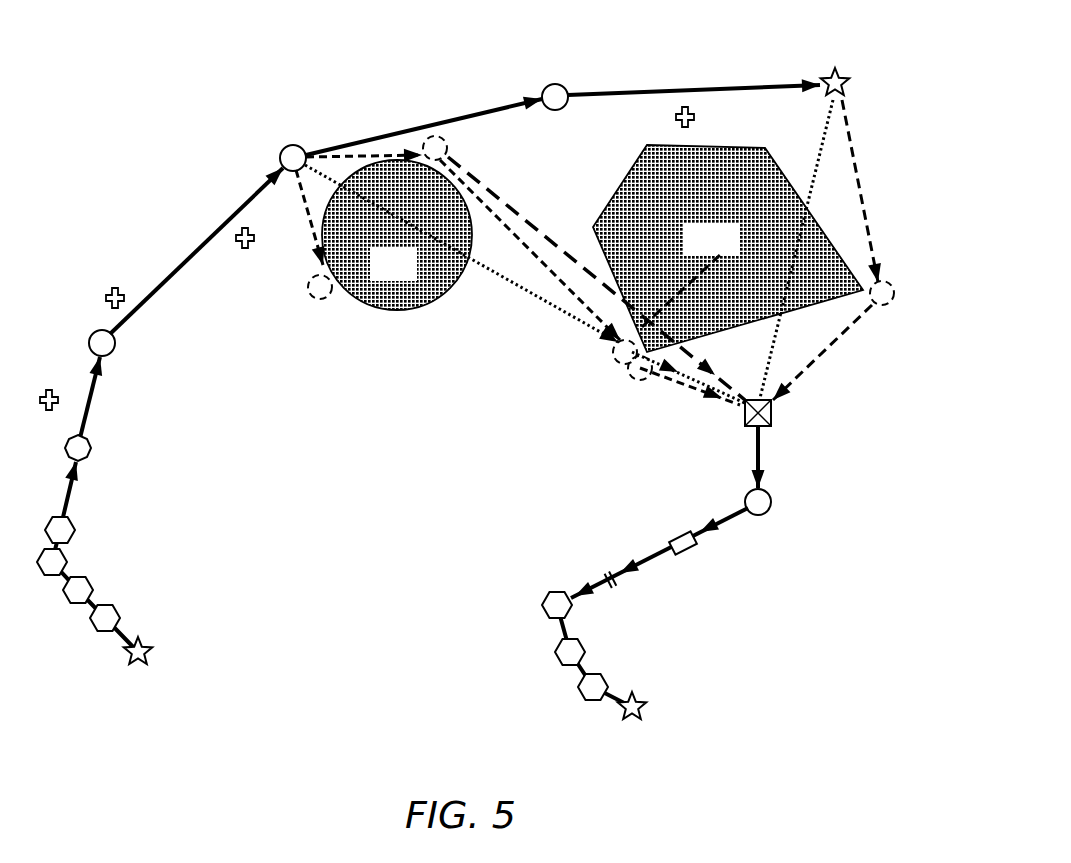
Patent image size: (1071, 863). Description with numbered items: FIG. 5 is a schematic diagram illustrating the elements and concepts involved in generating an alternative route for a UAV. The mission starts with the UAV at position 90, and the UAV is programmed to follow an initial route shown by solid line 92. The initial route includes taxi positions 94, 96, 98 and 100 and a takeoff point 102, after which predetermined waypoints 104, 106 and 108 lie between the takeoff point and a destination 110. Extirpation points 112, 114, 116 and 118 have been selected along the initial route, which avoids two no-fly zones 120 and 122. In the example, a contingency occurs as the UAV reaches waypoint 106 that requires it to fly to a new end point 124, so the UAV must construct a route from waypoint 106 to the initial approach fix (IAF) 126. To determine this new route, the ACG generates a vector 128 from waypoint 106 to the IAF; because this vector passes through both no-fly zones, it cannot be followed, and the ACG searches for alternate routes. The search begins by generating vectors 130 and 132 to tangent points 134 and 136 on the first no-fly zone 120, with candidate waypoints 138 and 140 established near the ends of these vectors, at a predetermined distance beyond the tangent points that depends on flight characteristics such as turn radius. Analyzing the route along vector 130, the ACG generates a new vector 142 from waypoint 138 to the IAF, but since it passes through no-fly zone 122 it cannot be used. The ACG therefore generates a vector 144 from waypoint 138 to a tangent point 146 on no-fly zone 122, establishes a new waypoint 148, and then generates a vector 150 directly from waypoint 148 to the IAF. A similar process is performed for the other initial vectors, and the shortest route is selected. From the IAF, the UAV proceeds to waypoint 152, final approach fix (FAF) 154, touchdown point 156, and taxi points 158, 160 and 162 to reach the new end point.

The position 90 is at (152, 653).
The solid line 92 is at (167, 287).
The taxi position 94 is at (120, 618).
The taxi position 96 is at (92, 588).
The taxi position 98 is at (65, 560).
The taxi position 100 is at (73, 523).
The takeoff point 102 is at (93, 448).
The waypoint 104 is at (117, 350).
The waypoint 106 is at (282, 150).
The waypoint 108 is at (558, 84).
The destination 110 is at (830, 72).
The extirpation point 112 is at (45, 410).
The extirpation point 114 is at (106, 298).
The extirpation point 116 is at (240, 248).
The extirpation point 118 is at (694, 120).
The no-fly zone 120 is at (412, 277).
The no-fly zone 122 is at (735, 254).
The new end point 124 is at (622, 722).
The initial approach fix (IAF) 126 is at (765, 428).
The vector 128 is at (545, 300).
The vector 130 is at (367, 152).
The vector 132 is at (312, 222).
The tangent point 134 is at (416, 147).
The tangent point 136 is at (317, 268).
The candidate waypoint 138 is at (447, 137).
The candidate waypoint 140 is at (328, 298).
The vector 142 is at (535, 223).
The vector 144 is at (523, 253).
The tangent point 146 is at (622, 358).
The waypoint 148 is at (643, 378).
The vector 150 is at (702, 395).
The waypoint 152 is at (770, 513).
The final approach fix (FAF) 154 is at (690, 552).
The touchdown point 156 is at (608, 573).
The taxi point 158 is at (543, 603).
The taxi point 160 is at (557, 655).
The taxi point 162 is at (583, 693).